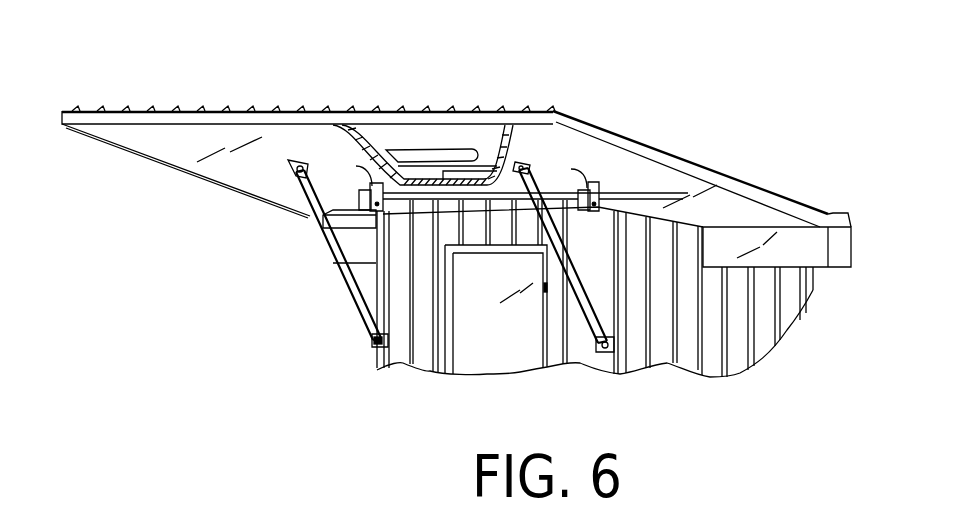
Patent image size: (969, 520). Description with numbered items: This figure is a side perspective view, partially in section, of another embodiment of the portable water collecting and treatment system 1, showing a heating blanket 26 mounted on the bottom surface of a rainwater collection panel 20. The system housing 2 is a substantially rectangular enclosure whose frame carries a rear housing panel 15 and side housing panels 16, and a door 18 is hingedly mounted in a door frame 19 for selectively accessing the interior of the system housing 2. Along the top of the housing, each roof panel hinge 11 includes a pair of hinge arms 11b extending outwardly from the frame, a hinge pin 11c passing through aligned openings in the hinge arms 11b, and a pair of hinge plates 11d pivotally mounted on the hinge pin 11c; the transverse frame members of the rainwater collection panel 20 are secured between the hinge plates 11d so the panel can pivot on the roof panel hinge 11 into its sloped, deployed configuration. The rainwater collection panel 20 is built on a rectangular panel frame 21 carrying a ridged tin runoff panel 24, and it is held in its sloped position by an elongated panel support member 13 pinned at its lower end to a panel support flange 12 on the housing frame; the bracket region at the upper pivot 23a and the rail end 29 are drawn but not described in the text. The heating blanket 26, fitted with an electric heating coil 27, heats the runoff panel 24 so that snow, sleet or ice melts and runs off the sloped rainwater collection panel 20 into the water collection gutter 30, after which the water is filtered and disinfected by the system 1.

The portable water collecting and treatment system 1 is at (621, 100).
The system housing 2 is at (818, 292).
The roof panel hinge 11 is at (370, 229).
The hinge arms 11b is at (386, 203).
The hinge pin 11c is at (362, 192).
The hinge plates 11d is at (371, 196).
The panel support flange 12 is at (378, 368).
The panel support member 13 is at (344, 306).
The rear housing panel 15 is at (710, 358).
The side housing panels 16 is at (420, 346).
The door 18 is at (530, 357).
The door frame 19 is at (454, 344).
The rainwater collection panel 20 is at (135, 108).
The panel frame 21 is at (200, 108).
The strut hinge bracket 23a is at (290, 163).
The runoff panel 24 is at (247, 110).
The heating blanket 26 is at (134, 134).
The electric heating coil 27 is at (423, 150).
The rail end 29 is at (352, 242).
The water collection gutter 30 is at (794, 240).